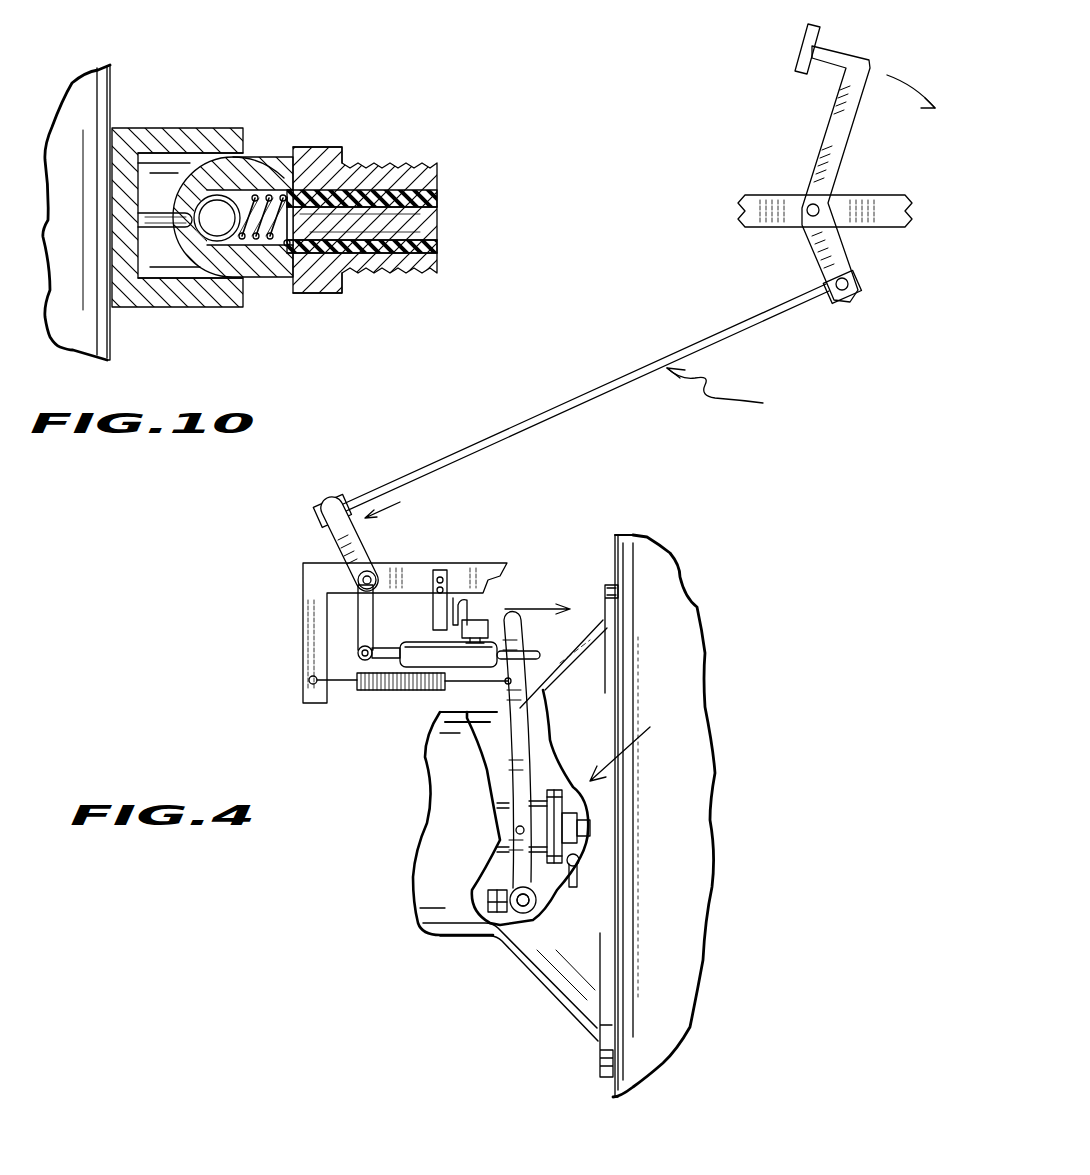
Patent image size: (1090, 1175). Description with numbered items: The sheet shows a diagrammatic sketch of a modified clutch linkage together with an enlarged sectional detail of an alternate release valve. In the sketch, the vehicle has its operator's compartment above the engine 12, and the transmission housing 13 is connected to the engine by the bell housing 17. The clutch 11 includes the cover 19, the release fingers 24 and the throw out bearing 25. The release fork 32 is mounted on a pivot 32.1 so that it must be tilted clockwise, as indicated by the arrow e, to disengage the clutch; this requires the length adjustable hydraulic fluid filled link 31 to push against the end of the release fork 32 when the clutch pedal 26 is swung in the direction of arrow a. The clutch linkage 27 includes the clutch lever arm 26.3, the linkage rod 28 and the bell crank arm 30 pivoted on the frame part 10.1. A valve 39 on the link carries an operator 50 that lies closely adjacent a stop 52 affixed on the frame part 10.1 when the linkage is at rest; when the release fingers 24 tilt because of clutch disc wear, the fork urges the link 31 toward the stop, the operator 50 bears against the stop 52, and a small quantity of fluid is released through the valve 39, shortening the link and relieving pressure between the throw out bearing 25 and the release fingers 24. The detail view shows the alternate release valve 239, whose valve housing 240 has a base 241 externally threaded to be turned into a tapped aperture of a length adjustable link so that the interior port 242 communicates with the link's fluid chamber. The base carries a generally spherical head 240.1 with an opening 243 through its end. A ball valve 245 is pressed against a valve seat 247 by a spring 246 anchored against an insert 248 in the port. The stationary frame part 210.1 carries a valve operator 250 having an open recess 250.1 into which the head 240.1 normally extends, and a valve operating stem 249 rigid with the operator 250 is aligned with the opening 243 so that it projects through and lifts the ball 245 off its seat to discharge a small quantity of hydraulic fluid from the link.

In FIG. 10, the stationary frame part 210.1 is at (113, 83).
In FIG. 10, the valve operator 250 is at (143, 140).
In FIG. 10, the open recess 250.1 is at (167, 230).
In FIG. 10, the valve seat 247 is at (203, 205).
In FIG. 10, the spherical head 240.1 is at (278, 172).
In FIG. 10, the ball valve 245 is at (224, 228).
In FIG. 10, the spring 246 is at (253, 200).
In FIG. 10, the opening 243 is at (152, 272).
In FIG. 10, the valve operating stem 249 is at (143, 218).
In FIG. 10, the valve housing 240 is at (357, 177).
In FIG. 10, the release valve 239 is at (342, 294).
In FIG. 10, the insert 248 is at (437, 193).
In FIG. 10, the base 241 is at (428, 253).
In FIG. 10, the interior port 242 is at (416, 268).
In FIG. 4, the clutch pedal 26 is at (797, 60).
In FIG. 4, the arrow a is at (905, 88).
In FIG. 4, the frame part 10.1 is at (760, 203).
In FIG. 4, the clutch lever arm 26.3 is at (847, 247).
In FIG. 4, the linkage rod 28 is at (752, 317).
In FIG. 4, the clutch linkage 27 is at (743, 396).
In FIG. 4, the bell crank arm 30 is at (322, 547).
In FIG. 4, the stop 52 is at (428, 607).
In FIG. 4, the operator 50 is at (453, 607).
In FIG. 4, the valve 39 is at (488, 622).
In FIG. 4, the arrow e is at (528, 606).
In FIG. 4, the length adjustable hydraulic fluid filled link 31 is at (417, 668).
In FIG. 4, the release fork 32 is at (513, 740).
In FIG. 4, the transmission housing 13 is at (453, 790).
In FIG. 4, the clutch 11 is at (639, 745).
In FIG. 4, the throw out bearing 25 is at (580, 800).
In FIG. 4, the release fingers 24 is at (587, 870).
In FIG. 4, the cover 19 is at (548, 893).
In FIG. 4, the pivot 32.1 is at (518, 910).
In FIG. 4, the bell housing 17 is at (582, 998).
In FIG. 4, the engine 12 is at (660, 1053).